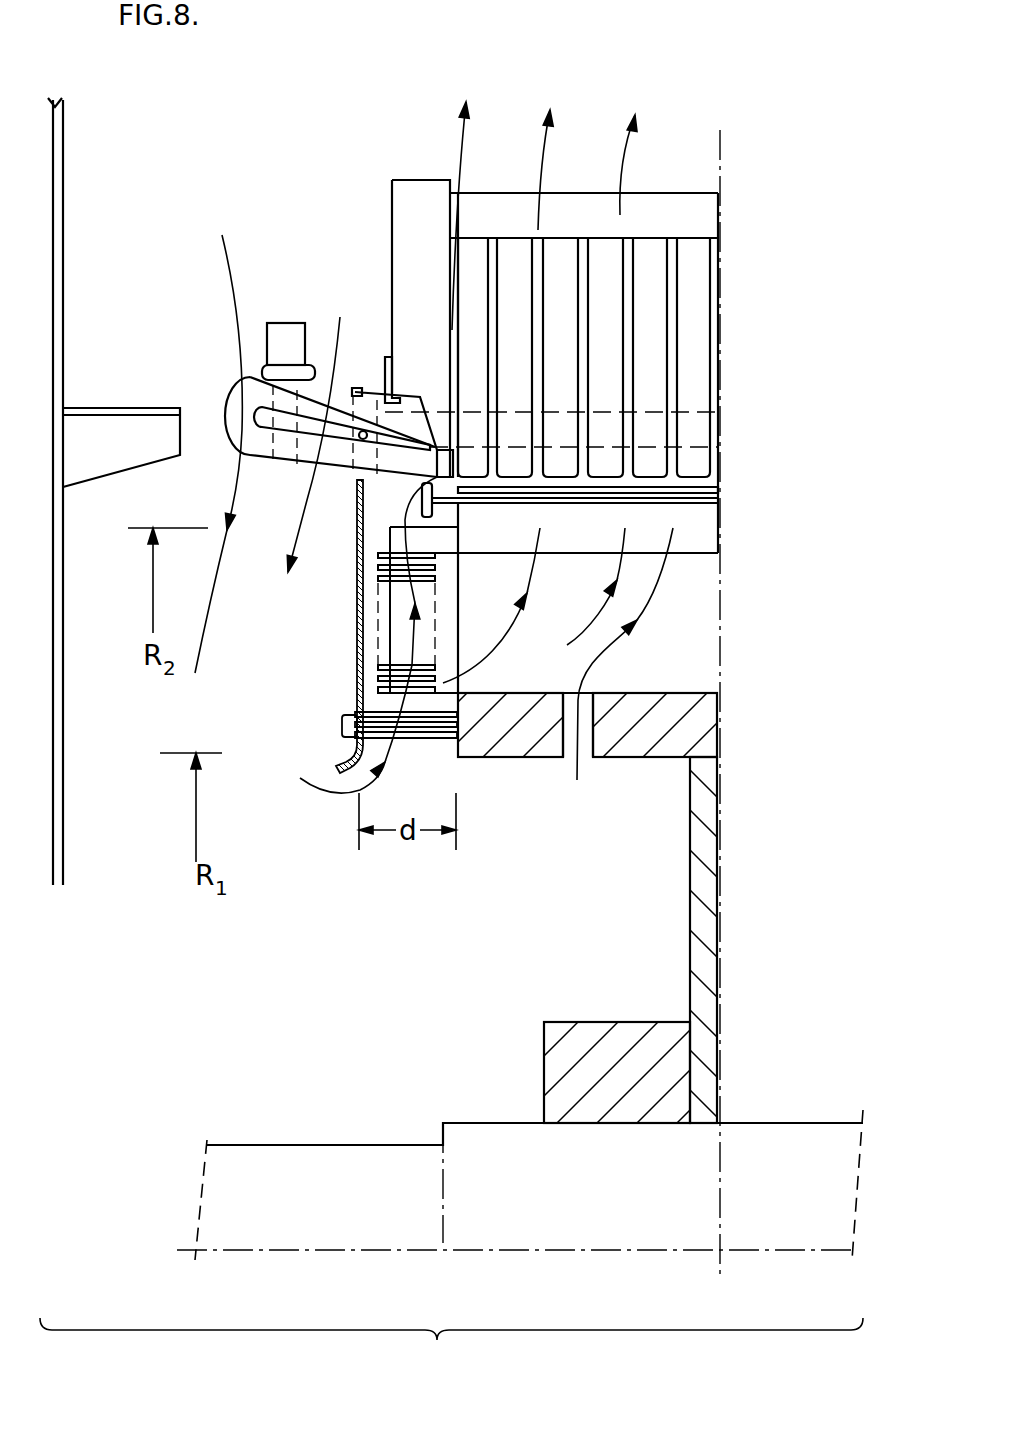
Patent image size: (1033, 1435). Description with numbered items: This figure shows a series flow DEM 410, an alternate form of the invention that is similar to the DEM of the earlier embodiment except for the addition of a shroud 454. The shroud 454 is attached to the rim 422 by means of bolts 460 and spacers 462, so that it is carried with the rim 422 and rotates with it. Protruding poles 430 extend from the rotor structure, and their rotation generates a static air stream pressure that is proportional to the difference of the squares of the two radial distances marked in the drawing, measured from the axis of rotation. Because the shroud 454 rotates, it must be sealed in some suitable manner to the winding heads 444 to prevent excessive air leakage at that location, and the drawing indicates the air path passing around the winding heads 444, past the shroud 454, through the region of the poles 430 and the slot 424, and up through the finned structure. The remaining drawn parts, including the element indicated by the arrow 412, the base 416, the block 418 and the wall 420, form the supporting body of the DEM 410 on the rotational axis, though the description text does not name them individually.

The series flow DEM 410 is at (600, 901).
The hub 412 is at (617, 940).
The base shaft 416 is at (478, 1123).
The hub base block 418 is at (683, 970).
The hub wall 420 is at (689, 893).
The rim 422 is at (500, 758).
The slot 424 is at (587, 697).
The protruding poles 430 is at (440, 680).
The winding heads 444 is at (237, 398).
The shroud 454 is at (357, 612).
The bolts 460 is at (340, 713).
The spacers 462 is at (425, 737).